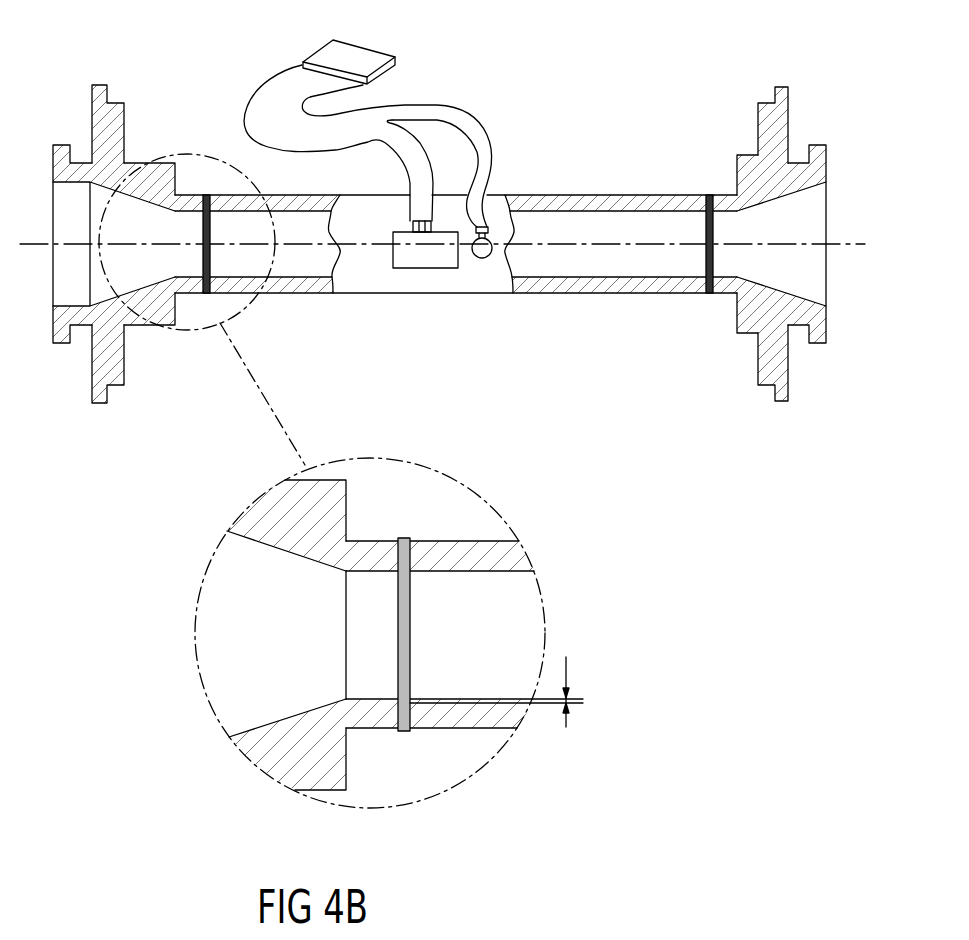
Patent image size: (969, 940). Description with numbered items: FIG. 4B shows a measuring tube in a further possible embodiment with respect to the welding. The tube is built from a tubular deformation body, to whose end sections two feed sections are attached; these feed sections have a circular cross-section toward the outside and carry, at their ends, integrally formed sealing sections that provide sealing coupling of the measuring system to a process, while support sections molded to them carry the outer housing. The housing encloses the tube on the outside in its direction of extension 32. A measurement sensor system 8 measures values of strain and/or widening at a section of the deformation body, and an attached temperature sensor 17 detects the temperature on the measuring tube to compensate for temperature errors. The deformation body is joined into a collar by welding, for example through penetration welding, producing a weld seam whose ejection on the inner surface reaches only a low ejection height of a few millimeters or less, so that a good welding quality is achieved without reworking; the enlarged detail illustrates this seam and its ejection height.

The measurement sensor system 8 is at (423, 260).
The temperature sensor 17 is at (484, 257).
The direction of extension 32 is at (610, 242).